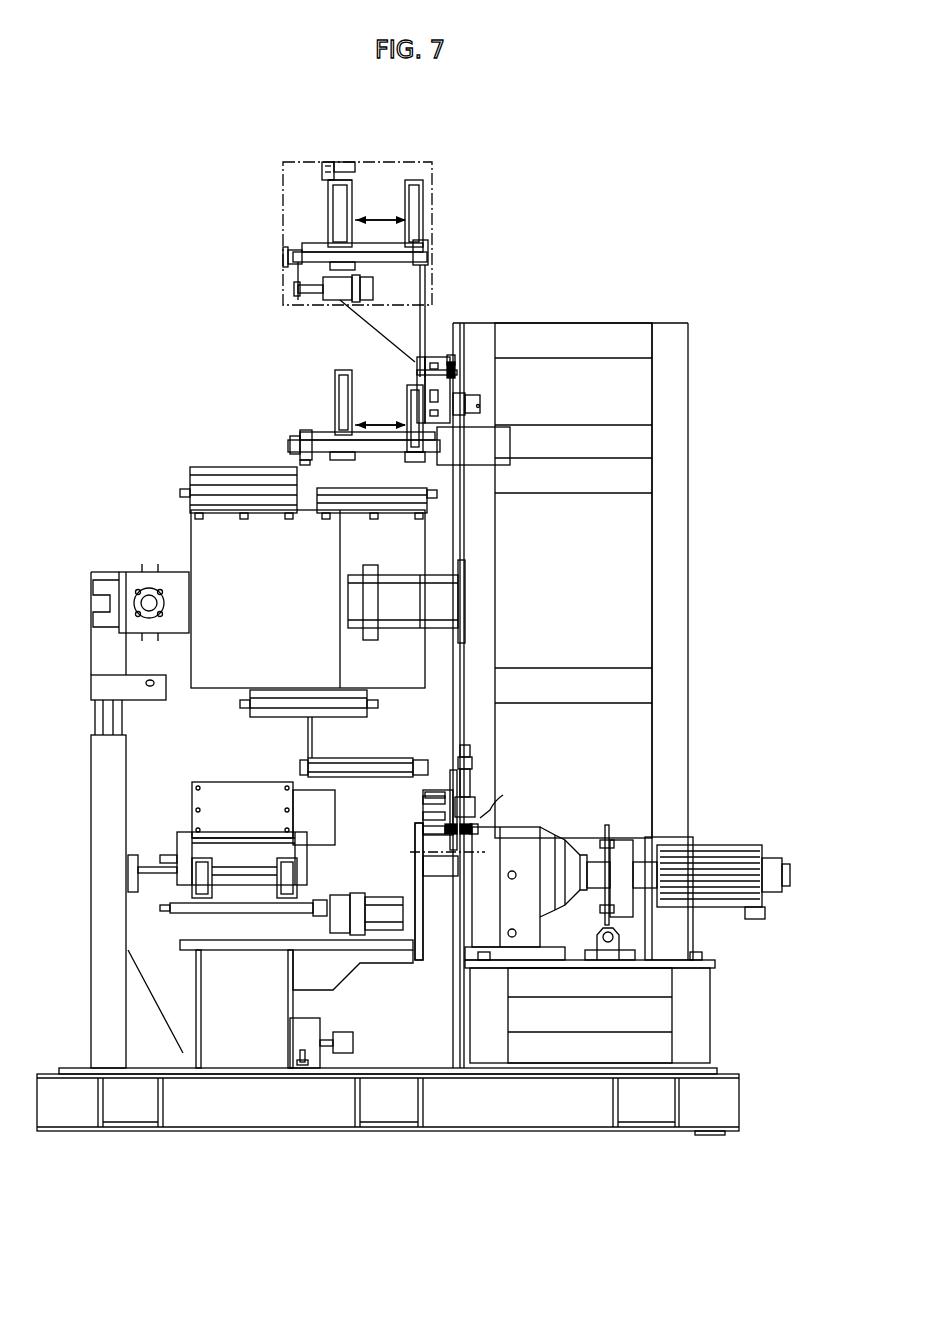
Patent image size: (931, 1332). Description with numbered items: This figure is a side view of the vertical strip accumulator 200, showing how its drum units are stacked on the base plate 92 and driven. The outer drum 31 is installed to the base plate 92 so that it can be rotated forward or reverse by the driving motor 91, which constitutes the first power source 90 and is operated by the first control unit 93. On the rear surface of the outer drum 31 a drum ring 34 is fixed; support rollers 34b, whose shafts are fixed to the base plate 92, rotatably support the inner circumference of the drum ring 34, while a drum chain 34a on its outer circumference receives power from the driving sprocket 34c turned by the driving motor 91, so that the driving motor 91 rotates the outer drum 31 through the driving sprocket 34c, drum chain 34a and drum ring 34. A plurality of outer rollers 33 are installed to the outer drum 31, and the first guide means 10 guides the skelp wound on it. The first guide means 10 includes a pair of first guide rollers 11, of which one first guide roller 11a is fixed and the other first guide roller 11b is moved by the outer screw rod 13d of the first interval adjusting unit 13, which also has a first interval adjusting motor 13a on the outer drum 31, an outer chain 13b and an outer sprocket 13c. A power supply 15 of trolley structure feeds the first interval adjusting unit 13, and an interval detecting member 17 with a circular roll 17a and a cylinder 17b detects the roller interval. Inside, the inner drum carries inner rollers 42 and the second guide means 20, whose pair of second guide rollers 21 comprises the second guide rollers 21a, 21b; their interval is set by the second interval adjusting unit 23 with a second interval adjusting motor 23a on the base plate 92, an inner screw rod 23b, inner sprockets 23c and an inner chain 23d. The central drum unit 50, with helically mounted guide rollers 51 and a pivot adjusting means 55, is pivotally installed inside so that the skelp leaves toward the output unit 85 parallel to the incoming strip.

The first guide means 10 is at (323, 246).
The first guide rollers 11 is at (353, 181).
The first guide roller 11a is at (423, 212).
The first guide roller 11b is at (330, 200).
The first interval adjusting unit 13 is at (360, 293).
The first interval adjusting motor 13a is at (325, 312).
The outer chain 13b is at (295, 300).
The outer sprocket 13c is at (290, 263).
The outer screw rod 13d is at (405, 258).
The power supply 15 is at (455, 352).
The interval detecting member 17 is at (323, 637).
The circular roll 17a is at (350, 162).
The cylinder 17b is at (302, 1055).
The second guide means 20 is at (390, 647).
The second guide rollers 21 is at (350, 393).
The second guide roller 21a is at (410, 390).
The second guide roller 21b is at (340, 383).
The second interval adjusting unit 23 is at (390, 453).
The second interval adjusting motor 23a is at (510, 445).
The inner screw rod 23b is at (380, 448).
The inner sprocket 23c is at (297, 438).
The inner chain 23d is at (305, 462).
The outer drum 31 is at (405, 292).
The outer roller 33 is at (383, 965).
The drum ring 34 is at (450, 656).
The drum chain 34a is at (438, 363).
The support rollers 34b is at (465, 405).
The driving sprocket 34c is at (438, 882).
The inner rollers 42 is at (378, 758).
The central drum unit 50 is at (255, 743).
The guide rollers 51 is at (212, 472).
The pivot adjusting means 55 is at (133, 560).
The output unit 85 is at (197, 772).
The first power source 90 is at (621, 695).
The driving motor 91 is at (590, 830).
The base plate 92 is at (486, 567).
The first control unit 93 is at (737, 845).
The vertical strip accumulator 200 is at (463, 1143).